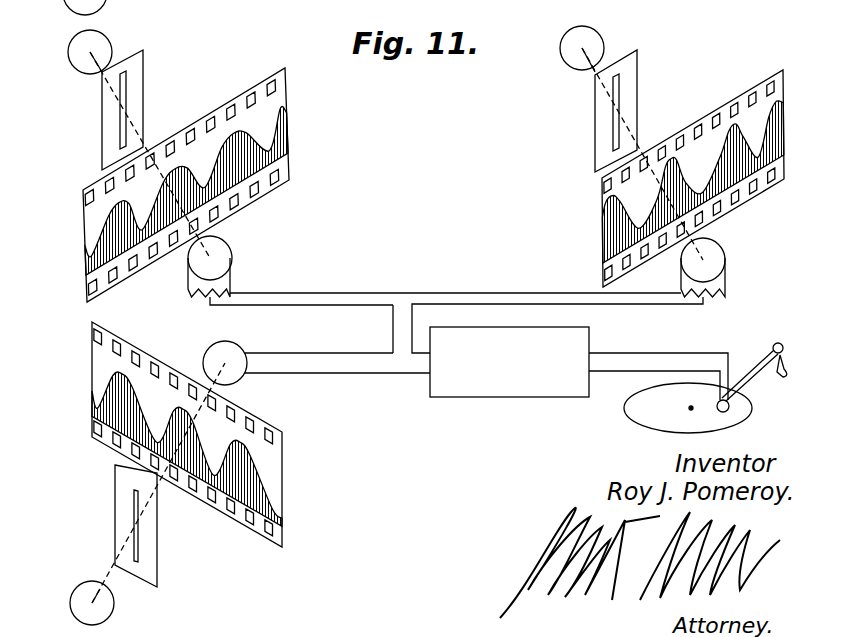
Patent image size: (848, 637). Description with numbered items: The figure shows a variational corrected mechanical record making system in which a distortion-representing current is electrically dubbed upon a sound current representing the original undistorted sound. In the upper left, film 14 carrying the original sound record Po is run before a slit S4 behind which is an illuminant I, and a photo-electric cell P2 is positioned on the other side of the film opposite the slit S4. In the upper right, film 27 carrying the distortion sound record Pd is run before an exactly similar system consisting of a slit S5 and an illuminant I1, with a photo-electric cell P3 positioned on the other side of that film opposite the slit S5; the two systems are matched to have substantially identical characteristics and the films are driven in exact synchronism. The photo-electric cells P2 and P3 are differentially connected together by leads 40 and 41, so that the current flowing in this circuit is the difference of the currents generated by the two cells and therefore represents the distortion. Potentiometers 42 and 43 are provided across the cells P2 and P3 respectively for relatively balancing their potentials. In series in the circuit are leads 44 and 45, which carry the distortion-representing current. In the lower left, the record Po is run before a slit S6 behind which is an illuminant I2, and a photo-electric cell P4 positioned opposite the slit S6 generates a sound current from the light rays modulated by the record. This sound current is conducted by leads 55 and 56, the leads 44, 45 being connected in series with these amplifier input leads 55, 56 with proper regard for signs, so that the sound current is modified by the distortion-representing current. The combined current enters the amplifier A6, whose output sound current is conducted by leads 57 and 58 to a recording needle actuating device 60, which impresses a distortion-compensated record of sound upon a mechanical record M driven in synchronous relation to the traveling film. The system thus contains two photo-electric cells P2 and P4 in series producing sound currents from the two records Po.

The illuminant I is at (100, 46).
The slit S4 is at (125, 97).
The film 14 is at (243, 76).
The original sound record Po is at (103, 257).
The photo-electric cell P2 is at (220, 256).
The potentiometer 42 is at (204, 298).
The photo-electric cell P3 is at (714, 258).
The potentiometer 43 is at (708, 300).
The lead 40 is at (313, 276).
The lead 41 is at (280, 306).
The lead 44 is at (392, 332).
The lead 55 is at (336, 343).
The photo-electric cell P4 is at (214, 362).
The lead 56 is at (329, 374).
The lead 45 is at (414, 323).
The amplifier A6 is at (466, 390).
The lead 57 is at (663, 340).
The lead 58 is at (635, 372).
The mechanical record M is at (641, 420).
The recording needle actuating device 60 is at (730, 406).
The illuminant I1 is at (595, 45).
The slit S5 is at (621, 97).
The film 27 is at (757, 68).
The distortion sound record Pd is at (603, 227).
The slit S6 is at (139, 545).
The illuminant I2 is at (84, 596).